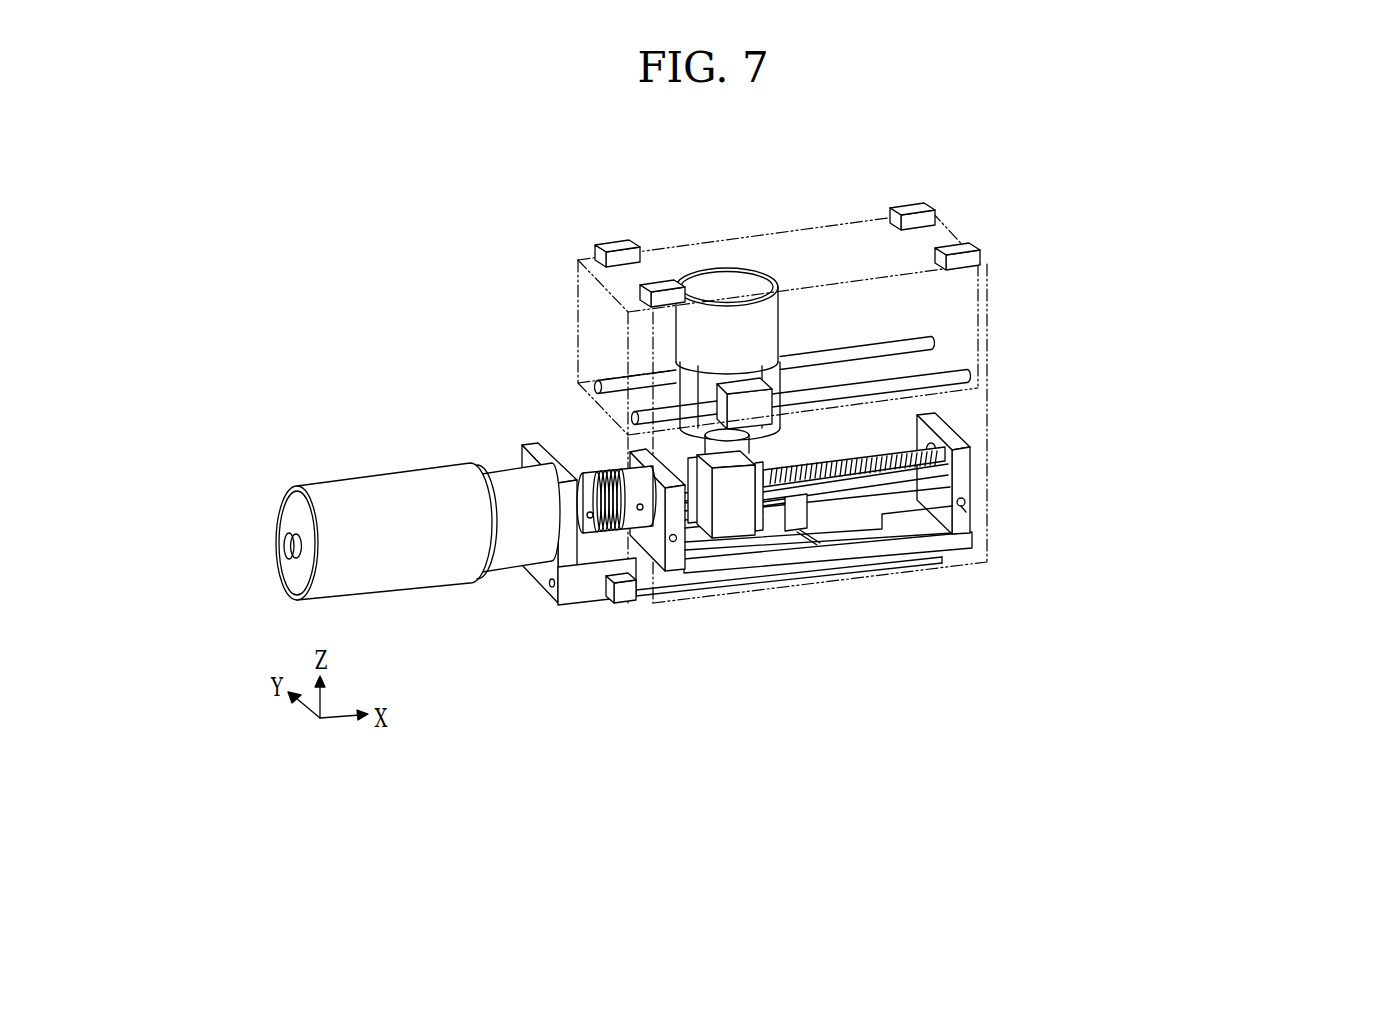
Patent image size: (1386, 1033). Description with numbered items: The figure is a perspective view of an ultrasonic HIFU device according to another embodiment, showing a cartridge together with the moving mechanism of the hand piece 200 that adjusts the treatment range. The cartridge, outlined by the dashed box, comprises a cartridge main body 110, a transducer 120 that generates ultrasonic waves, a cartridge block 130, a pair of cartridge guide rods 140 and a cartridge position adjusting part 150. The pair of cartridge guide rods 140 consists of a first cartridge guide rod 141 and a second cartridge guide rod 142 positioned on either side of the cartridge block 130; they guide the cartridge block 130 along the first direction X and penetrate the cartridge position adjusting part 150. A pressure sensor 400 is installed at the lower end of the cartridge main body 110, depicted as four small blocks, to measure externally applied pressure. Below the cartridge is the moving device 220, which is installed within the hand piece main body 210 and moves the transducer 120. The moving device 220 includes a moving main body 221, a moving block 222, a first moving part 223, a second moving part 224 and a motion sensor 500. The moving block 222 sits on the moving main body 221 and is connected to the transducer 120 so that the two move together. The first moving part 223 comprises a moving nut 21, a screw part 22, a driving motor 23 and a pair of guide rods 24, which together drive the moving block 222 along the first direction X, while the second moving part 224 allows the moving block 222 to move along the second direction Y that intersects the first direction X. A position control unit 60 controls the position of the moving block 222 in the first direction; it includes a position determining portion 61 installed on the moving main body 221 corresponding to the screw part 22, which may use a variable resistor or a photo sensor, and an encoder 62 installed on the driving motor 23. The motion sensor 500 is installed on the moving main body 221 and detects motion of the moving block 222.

The moving nut 21 is at (768, 512).
The screw part 22 is at (863, 470).
The driving motor 23 is at (437, 553).
The pair of guide rods 24 is at (888, 470).
The position control unit 60 is at (589, 610).
The position determining portion 61 is at (916, 560).
The encoder 62 is at (284, 546).
The cartridge main body 110 is at (926, 471).
The transducer 120 is at (728, 296).
The cartridge block 130 is at (958, 454).
The pair of cartridge guide rods 140 is at (935, 542).
The first cartridge guide rod 141 is at (942, 377).
The second cartridge guide rod 142 is at (925, 347).
The cartridge position adjusting part 150 is at (751, 403).
The hand piece 200 is at (806, 561).
The hand piece main body 210 is at (990, 538).
The moving device 220 is at (806, 561).
The moving main body 221 is at (593, 583).
The moving block 222 is at (740, 488).
The first moving part 223 is at (806, 601).
The second moving part 224 is at (923, 520).
The pressure sensor 400 is at (612, 243).
The motion sensor 500 is at (628, 596).